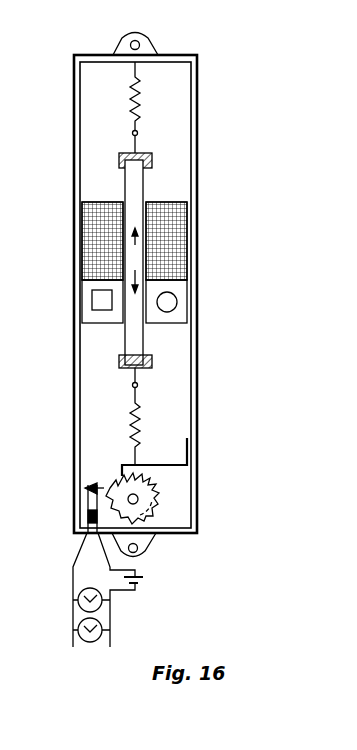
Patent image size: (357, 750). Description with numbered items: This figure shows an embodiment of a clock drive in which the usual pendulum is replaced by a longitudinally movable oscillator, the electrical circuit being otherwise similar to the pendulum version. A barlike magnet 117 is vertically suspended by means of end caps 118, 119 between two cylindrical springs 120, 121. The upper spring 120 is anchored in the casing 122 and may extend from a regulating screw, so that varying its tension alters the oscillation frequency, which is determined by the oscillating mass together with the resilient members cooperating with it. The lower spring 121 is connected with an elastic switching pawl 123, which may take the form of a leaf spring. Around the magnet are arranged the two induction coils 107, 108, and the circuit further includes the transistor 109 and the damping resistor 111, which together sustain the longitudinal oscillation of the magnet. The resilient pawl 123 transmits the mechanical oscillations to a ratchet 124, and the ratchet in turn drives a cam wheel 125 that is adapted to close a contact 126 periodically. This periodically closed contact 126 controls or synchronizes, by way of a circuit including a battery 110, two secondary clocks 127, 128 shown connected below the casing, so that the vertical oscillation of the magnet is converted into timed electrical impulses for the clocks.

The induction coil 107 is at (160, 272).
The induction coil 108 is at (178, 221).
The transistor 109 is at (176, 302).
The battery 110 is at (140, 580).
The damping resistor 111 is at (97, 300).
The barlike magnet 117 is at (140, 187).
The end cap 118 is at (148, 153).
The end cap 119 is at (153, 363).
The cylindrical spring 120 is at (140, 95).
The cylindrical spring 121 is at (138, 410).
The casing 122 is at (197, 70).
The elastic switching pawl 123 is at (160, 465).
The ratchet 124 is at (158, 500).
The cam wheel 125 is at (140, 506).
The contact 126 is at (88, 514).
The secondary clock 127 is at (79, 611).
The secondary clock 128 is at (79, 641).